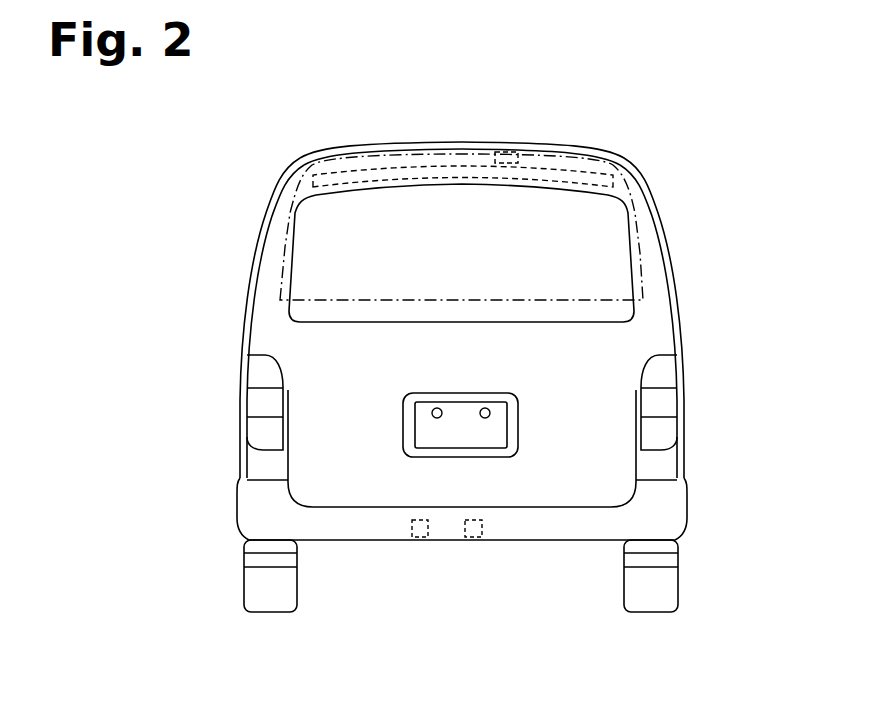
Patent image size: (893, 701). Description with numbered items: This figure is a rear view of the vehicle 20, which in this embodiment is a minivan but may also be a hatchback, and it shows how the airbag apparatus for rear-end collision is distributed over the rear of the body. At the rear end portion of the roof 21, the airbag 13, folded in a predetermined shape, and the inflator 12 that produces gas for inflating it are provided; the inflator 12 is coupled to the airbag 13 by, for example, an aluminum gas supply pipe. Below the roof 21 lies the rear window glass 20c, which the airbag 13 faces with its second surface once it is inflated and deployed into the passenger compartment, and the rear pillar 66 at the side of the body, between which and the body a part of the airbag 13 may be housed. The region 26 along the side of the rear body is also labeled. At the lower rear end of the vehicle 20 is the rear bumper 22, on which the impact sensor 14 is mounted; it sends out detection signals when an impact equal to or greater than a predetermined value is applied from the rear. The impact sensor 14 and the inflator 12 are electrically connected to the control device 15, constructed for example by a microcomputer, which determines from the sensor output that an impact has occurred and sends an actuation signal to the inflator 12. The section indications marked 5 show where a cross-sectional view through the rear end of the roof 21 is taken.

The vehicle 20 is at (697, 143).
The rear window glass 20c is at (623, 243).
The roof 21 is at (382, 143).
The rear pillar 66 is at (268, 228).
The rear quarter panel 26 is at (655, 337).
The inflator 12 is at (520, 152).
The airbag 13 is at (595, 174).
The section line V-V 5 is at (500, 216).
The rear bumper 22 is at (335, 541).
The control device 15 is at (416, 540).
The impact sensor 14 is at (469, 540).